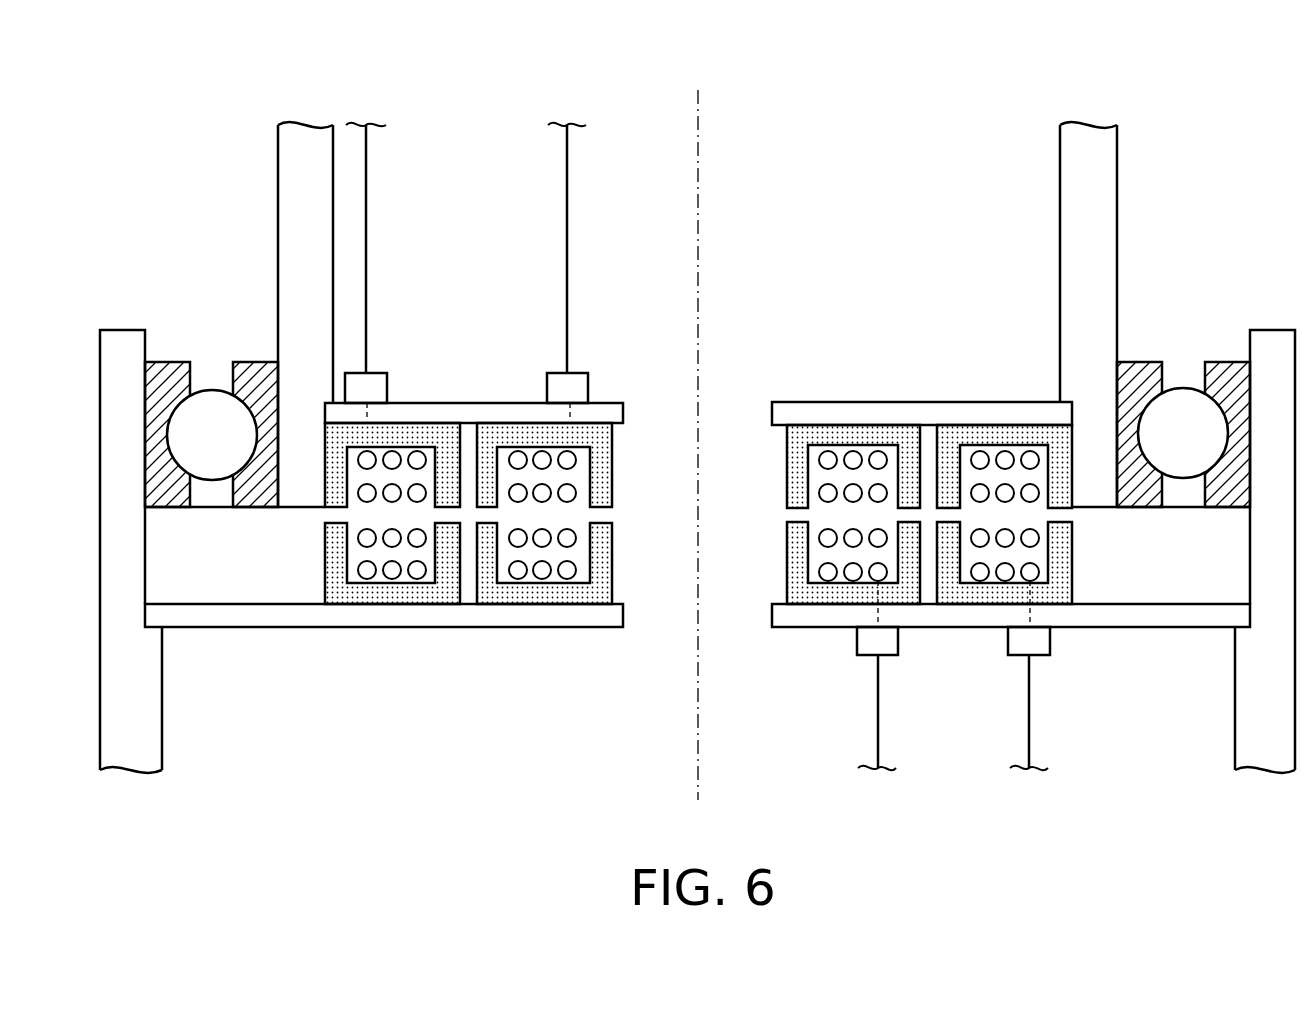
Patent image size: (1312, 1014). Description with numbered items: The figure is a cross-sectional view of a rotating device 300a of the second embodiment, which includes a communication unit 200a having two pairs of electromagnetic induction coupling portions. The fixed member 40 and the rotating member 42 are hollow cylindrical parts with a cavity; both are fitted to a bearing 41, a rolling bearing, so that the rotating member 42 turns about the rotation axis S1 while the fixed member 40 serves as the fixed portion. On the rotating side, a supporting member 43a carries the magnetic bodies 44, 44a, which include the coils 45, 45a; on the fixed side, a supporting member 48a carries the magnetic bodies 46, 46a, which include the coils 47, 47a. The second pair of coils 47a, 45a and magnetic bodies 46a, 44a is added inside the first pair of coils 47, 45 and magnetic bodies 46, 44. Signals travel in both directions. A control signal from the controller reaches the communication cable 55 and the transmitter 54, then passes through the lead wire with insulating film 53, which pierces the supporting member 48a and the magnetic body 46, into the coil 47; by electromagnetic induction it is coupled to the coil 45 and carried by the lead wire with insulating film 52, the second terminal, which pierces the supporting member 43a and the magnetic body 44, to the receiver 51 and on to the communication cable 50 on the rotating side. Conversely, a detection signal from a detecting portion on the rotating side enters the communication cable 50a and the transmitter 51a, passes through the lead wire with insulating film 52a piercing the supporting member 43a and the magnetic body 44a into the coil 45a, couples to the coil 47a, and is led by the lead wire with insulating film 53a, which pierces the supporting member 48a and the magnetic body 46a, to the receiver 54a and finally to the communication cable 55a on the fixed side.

The rotating device 300a is at (843, 68).
The communication unit 200a is at (997, 308).
The rotation axis S1 is at (698, 180).
The fixed member 40 is at (150, 695).
The bearing 41 is at (170, 362).
The rotating member 42 is at (278, 213).
The supporting member 43a is at (623, 413).
The magnetic body 44 is at (448, 440).
The magnetic body 44a is at (612, 465).
The coil 45 is at (417, 455).
The coil 45a is at (567, 495).
The magnetic body 46 is at (360, 595).
The magnetic body 46a is at (612, 560).
The coil 47 is at (417, 572).
The coil 47a is at (567, 572).
The supporting member 48a is at (623, 615).
The communication cable 50 is at (366, 210).
The communication cable 50a is at (567, 210).
The receiver 51 is at (373, 382).
The transmitter 51a is at (577, 382).
The lead wire with insulating film 52 is at (367, 418).
The lead wire with insulating film 52a is at (570, 418).
The lead wire with insulating film 53 is at (1030, 610).
The lead wire with insulating film 53a is at (877, 610).
The transmitter 54 is at (1050, 642).
The receiver 54a is at (898, 642).
The communication cable 55 is at (1029, 708).
The communication cable 55a is at (878, 708).